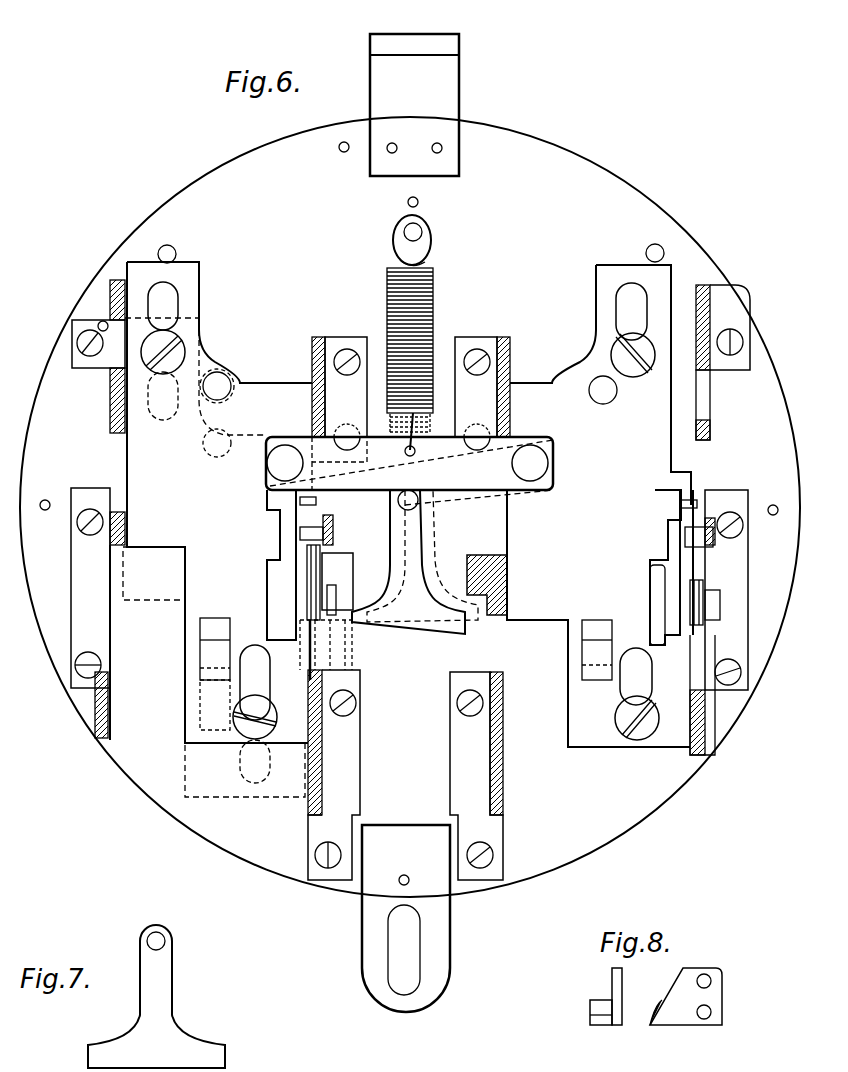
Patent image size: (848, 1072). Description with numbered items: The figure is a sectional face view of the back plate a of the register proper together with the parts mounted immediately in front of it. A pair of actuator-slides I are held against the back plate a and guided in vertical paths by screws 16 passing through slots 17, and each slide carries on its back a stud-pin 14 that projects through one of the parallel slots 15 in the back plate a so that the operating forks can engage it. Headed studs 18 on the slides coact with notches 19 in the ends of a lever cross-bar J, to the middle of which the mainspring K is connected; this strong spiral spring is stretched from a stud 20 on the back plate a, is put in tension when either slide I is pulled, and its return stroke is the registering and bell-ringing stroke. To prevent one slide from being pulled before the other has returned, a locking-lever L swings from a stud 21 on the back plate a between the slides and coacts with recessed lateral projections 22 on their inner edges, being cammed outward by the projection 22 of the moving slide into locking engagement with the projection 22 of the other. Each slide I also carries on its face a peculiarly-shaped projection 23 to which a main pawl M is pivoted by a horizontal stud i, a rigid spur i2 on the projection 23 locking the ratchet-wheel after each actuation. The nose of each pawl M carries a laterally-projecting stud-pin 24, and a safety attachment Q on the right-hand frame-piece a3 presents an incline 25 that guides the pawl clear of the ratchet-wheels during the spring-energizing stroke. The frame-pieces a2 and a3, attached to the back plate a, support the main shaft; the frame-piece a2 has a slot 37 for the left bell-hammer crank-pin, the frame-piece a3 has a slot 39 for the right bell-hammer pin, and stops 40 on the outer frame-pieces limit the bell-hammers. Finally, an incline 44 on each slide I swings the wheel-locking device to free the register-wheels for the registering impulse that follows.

In FIG. 6, the back plate a is at (410, 507).
In FIG. 6, the frame-piece a2 is at (304, 580).
In FIG. 6, the right-hand frame-piece a3 is at (529, 582).
In FIG. 6, the mainspring K is at (420, 362).
In FIG. 6, the stud 20 is at (431, 237).
In FIG. 6, the actuator-slide I is at (407, 520).
In FIG. 6, the lever cross-bar J is at (409, 471).
In FIG. 6, the locking-lever L is at (415, 562).
In FIG. 7, the locking-lever L is at (156, 996).
In FIG. 6, the main pawl M is at (270, 503).
In FIG. 6, the safety attachment Q is at (527, 541).
In FIG. 8, the safety attachment Q is at (656, 1010).
In FIG. 6, the horizontal stud i is at (338, 592).
In FIG. 6, the rigid spur i2 is at (300, 552).
In FIG. 6, the stud-pin 14 is at (592, 393).
In FIG. 6, the parallel slot 15 is at (240, 382).
In FIG. 6, the screw 16 is at (618, 717).
In FIG. 6, the slot 17 is at (400, 532).
In FIG. 6, the headed stud 18 is at (407, 463).
In FIG. 6, the notch 19 is at (268, 468).
In FIG. 6, the stud 21 is at (398, 500).
In FIG. 6, the recessed lateral projection 22 is at (520, 575).
In FIG. 6, the projection 23 is at (280, 592).
In FIG. 6, the stud-pin 24 is at (712, 486).
In FIG. 6, the incline 25 is at (298, 536).
In FIG. 8, the incline 25 is at (626, 1007).
In FIG. 6, the slot 37 is at (113, 366).
In FIG. 6, the slot 39 is at (702, 410).
In FIG. 6, the stop 40 is at (98, 326).
In FIG. 6, the incline 44 is at (406, 674).